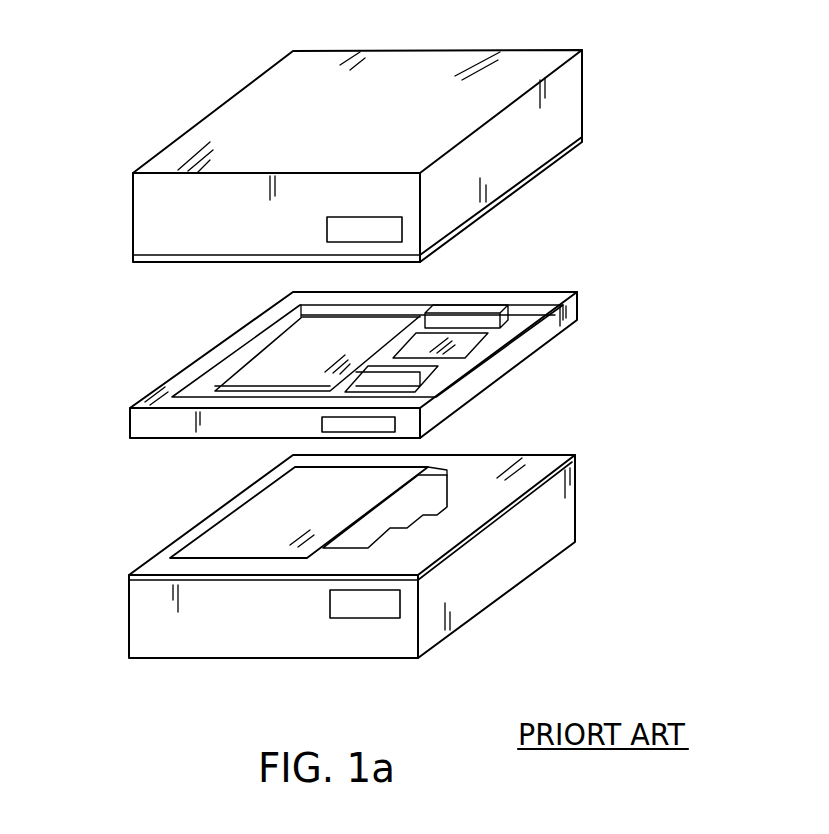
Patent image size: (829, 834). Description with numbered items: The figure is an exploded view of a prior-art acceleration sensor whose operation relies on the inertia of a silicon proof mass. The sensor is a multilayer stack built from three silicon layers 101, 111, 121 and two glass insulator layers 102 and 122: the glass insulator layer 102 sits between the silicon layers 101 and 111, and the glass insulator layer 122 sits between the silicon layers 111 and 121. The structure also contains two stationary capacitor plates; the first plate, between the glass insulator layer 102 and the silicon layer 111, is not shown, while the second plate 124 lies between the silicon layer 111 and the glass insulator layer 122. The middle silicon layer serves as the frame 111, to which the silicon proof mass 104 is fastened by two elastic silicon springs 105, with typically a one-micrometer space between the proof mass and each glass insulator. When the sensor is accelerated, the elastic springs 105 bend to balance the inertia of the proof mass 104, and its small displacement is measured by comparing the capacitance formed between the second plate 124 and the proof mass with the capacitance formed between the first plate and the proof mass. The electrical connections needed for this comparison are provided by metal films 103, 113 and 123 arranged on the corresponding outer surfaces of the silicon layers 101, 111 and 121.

The silicon layer 101 is at (567, 80).
The glass insulator layer 102 is at (553, 160).
The metal film 103 is at (374, 228).
The silicon proof mass 104 is at (300, 352).
The elastic silicon springs 105 is at (463, 319).
The silicon layer (frame) 111 is at (493, 365).
The metal film 113 is at (333, 423).
The silicon layer 121 is at (530, 537).
The glass insulator layer 122 is at (473, 490).
The metal film 123 is at (363, 603).
The second capacitor plate 124 is at (237, 537).